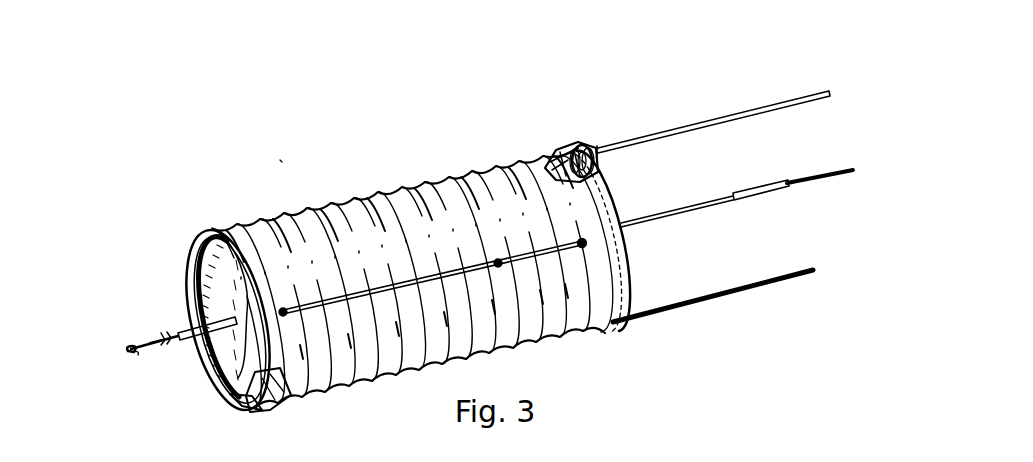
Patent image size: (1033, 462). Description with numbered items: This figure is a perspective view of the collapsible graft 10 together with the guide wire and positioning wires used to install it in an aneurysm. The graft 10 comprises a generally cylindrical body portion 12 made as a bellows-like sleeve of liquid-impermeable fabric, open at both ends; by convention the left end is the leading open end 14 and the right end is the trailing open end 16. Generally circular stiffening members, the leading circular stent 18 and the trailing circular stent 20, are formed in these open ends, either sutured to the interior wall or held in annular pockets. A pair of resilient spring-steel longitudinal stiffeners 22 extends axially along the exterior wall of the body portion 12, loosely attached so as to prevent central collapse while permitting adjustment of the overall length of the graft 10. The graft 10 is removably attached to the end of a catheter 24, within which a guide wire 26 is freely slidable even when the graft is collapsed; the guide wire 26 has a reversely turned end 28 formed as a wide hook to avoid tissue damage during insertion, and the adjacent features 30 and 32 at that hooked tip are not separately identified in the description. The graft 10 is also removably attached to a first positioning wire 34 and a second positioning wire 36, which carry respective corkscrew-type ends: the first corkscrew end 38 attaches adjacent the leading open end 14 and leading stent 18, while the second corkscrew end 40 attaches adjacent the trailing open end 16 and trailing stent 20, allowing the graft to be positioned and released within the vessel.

The graft 10 is at (274, 156).
The body portion 12 is at (376, 191).
The leading open end 14 is at (204, 375).
The trailing open end 16 is at (640, 261).
The leading circular stent 18 is at (282, 415).
The trailing circular stent 20 is at (562, 144).
The longitudinal stiffeners 22 is at (372, 289).
The catheter 24 is at (700, 204).
The guide wire 26 is at (818, 178).
The reversely turned end 28 is at (152, 334).
The tip 30 is at (130, 348).
The hook 32 is at (136, 355).
The first positioning wire 34 is at (711, 296).
The second positioning wire 36 is at (701, 124).
The first corkscrew end 38 is at (233, 412).
The second corkscrew end 40 is at (586, 150).